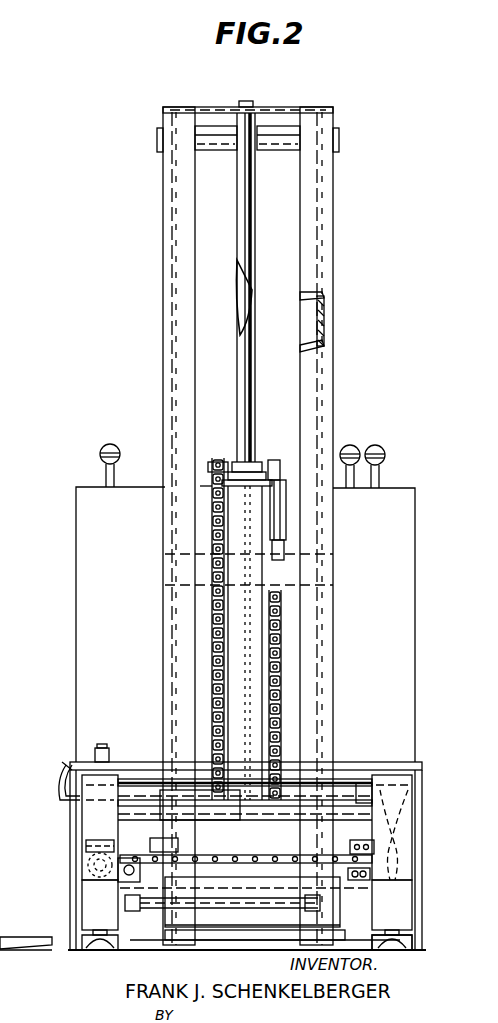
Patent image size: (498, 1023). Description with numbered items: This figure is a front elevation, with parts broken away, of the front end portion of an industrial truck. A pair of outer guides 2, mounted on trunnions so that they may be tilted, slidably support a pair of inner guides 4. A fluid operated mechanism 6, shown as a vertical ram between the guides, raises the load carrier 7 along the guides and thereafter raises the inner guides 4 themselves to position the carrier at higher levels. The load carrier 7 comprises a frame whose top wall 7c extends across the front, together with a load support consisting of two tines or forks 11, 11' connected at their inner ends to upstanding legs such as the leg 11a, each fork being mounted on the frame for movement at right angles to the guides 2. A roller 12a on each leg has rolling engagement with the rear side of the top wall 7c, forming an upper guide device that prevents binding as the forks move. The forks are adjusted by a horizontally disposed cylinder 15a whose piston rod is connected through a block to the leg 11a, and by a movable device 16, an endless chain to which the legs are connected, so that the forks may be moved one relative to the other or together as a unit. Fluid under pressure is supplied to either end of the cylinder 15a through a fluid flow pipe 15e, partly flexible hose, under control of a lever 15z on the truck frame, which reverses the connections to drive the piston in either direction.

The outer guides 2 is at (168, 276).
The inner guides 4 is at (310, 324).
The fluid operated mechanism 6 is at (286, 429).
The lever 15z is at (378, 462).
The load carrier 7 is at (52, 866).
The top wall 7c is at (346, 765).
The roller 12a is at (110, 762).
The fluid flow pipe 15e is at (60, 778).
The upstanding leg 11a is at (85, 884).
The movable device 16 is at (212, 860).
The cylinder 15a is at (280, 870).
The tine or fork 11 is at (96, 955).
The tine or fork 11' is at (371, 943).